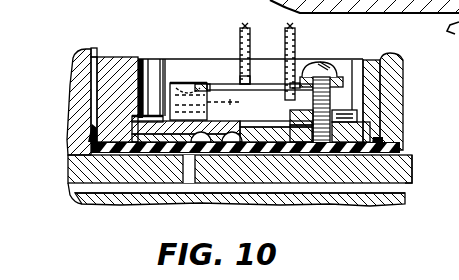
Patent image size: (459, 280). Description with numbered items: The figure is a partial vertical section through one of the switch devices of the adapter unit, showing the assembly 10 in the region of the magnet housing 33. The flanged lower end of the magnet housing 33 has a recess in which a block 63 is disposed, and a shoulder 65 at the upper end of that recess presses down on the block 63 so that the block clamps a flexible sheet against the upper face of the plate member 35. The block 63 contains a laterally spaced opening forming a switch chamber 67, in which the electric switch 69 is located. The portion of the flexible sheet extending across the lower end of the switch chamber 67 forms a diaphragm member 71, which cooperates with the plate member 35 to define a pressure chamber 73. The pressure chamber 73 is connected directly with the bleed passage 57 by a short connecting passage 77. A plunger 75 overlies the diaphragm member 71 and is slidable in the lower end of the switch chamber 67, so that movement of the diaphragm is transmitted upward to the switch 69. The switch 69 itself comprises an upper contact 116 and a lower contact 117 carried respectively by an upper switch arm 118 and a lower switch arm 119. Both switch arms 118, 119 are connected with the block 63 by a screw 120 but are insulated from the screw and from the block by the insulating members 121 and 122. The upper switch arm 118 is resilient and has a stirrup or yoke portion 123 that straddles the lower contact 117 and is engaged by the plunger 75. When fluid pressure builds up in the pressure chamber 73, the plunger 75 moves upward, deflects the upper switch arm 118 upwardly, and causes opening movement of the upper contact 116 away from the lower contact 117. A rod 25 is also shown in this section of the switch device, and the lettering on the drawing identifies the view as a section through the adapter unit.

The apparatus 10 is at (431, 27).
The rod 25 is at (249, 30).
The magnet housing 33 is at (387, 107).
The plate member 35 is at (410, 160).
The bleed passage 57 is at (107, 190).
The block 63 is at (100, 85).
The shoulder 65 is at (92, 49).
The switch chamber 67 is at (300, 68).
The electric switch 69 is at (283, 79).
The diaphragm member 71 is at (357, 150).
The pressure chamber 73 is at (147, 163).
The plunger 75 is at (95, 112).
The connecting passage 77 is at (195, 170).
The upper contact 116 is at (192, 88).
The lower contact 117 is at (260, 98).
The upper switch arm 118 is at (251, 86).
The lower switch arm 119 is at (340, 123).
The screw 120 is at (327, 63).
The insulating member 121 is at (340, 100).
The insulating member 122 is at (278, 130).
The stirrup or yoke portion 123 is at (173, 107).